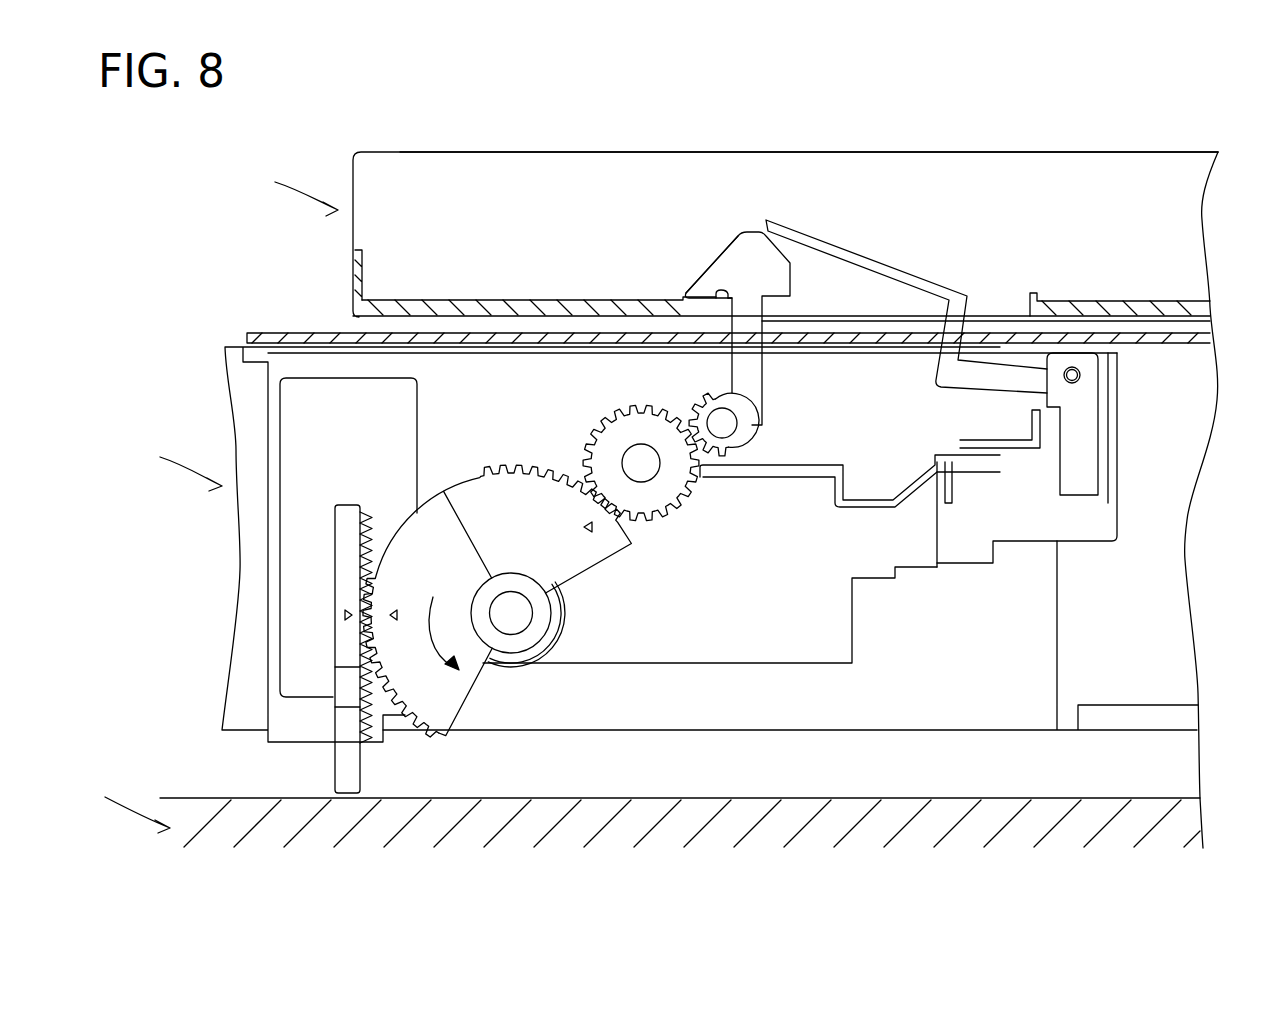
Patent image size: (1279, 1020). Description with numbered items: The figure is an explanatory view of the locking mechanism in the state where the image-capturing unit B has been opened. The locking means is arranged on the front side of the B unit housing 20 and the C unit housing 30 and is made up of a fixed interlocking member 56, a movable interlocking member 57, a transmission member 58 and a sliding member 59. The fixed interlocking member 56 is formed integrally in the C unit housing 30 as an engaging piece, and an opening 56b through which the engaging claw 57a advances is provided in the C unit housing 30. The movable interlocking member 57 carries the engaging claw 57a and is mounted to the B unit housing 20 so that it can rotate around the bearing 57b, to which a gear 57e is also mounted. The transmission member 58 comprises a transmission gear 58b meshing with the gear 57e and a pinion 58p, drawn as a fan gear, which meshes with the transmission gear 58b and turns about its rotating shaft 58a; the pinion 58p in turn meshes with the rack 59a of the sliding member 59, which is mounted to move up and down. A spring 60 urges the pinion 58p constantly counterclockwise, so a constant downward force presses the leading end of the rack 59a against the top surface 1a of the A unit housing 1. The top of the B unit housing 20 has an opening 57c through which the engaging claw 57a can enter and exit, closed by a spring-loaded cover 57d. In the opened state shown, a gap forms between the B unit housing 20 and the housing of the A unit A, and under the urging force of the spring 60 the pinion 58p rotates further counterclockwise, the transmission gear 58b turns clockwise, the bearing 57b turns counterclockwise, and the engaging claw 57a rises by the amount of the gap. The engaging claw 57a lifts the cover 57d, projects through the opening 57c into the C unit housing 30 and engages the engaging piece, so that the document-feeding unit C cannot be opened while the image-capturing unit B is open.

The A unit housing 1 is at (1178, 823).
The top surface 1a is at (210, 798).
The B unit housing 20 is at (273, 337).
The C unit housing 30 is at (988, 173).
The fixed interlocking member 56 is at (692, 298).
The opening 56b is at (1001, 292).
The movable interlocking member 57 is at (750, 377).
The engaging claw 57a is at (717, 272).
The bearing 57b is at (728, 428).
The opening 57c is at (887, 338).
The cover 57d is at (880, 272).
The gear 57e is at (702, 392).
The transmission member 58 is at (686, 607).
The rotation shaft 58a is at (516, 622).
The transmission gear 58b is at (605, 432).
The pinion 58p is at (487, 492).
The sliding member 59 is at (300, 578).
The rack 59a is at (371, 512).
The spring 60 is at (567, 613).
The A unit A is at (128, 807).
The image-capturing unit B is at (569, 570).
The document-feeding unit C is at (735, 197).